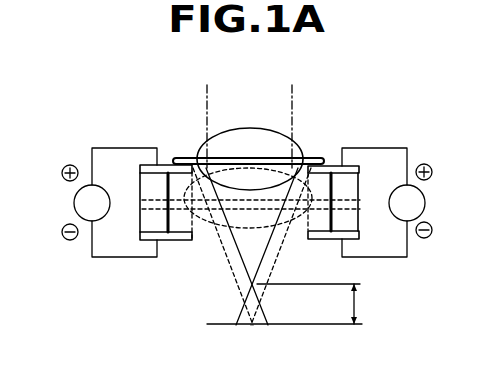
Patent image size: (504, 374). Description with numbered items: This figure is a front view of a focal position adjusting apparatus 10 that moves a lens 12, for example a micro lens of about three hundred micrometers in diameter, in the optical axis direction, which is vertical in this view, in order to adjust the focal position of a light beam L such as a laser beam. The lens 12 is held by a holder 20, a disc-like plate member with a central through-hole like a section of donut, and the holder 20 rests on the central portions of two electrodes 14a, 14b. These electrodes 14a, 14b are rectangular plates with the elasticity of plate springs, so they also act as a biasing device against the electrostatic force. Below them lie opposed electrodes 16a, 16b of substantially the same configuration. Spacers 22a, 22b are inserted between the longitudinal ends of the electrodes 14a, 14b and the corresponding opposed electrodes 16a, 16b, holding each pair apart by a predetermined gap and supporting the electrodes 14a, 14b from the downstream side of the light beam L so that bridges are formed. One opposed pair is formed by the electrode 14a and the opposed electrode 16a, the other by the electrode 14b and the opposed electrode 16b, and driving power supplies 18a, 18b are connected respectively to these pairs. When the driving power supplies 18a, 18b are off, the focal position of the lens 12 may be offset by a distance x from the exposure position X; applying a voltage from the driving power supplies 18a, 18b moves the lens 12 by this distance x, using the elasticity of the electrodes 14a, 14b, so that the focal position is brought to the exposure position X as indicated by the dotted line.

The focal position adjusting apparatus 10 is at (386, 95).
The lens 12 is at (252, 128).
The electrode 14a is at (168, 165).
The electrode 14b is at (352, 165).
The opposed electrode 16a is at (172, 242).
The opposed electrode 16b is at (322, 238).
The driving power supply 18a is at (90, 185).
The driving power supply 18b is at (425, 203).
The holder 20 is at (316, 158).
The spacer 22a is at (147, 219).
The spacer 22b is at (354, 220).
The light beam L is at (292, 128).
The distance x is at (315, 304).
The exposure position X is at (292, 325).